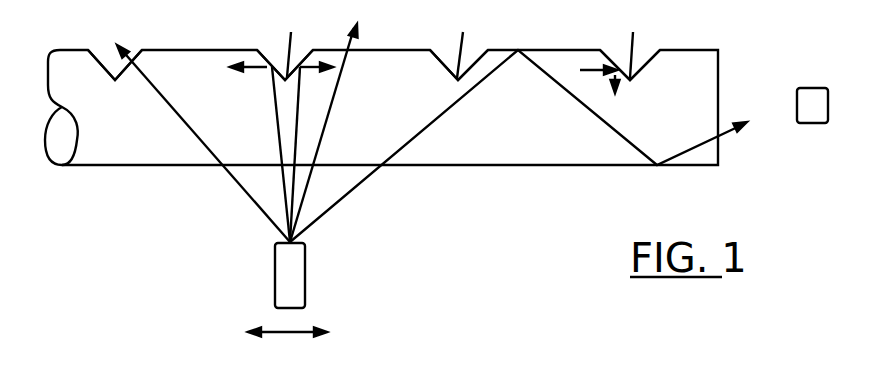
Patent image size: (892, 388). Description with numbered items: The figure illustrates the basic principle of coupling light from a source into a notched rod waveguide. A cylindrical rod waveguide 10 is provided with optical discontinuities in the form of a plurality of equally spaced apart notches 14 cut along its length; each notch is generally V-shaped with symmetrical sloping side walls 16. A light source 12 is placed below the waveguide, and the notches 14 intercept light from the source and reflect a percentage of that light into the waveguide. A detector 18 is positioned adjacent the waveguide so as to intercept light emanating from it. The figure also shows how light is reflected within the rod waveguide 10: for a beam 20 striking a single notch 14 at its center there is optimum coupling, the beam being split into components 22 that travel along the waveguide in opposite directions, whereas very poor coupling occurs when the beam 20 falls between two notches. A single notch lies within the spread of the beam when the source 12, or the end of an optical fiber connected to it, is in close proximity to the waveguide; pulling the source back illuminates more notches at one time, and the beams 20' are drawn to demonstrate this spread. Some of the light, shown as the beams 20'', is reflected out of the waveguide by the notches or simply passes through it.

The cylindrical rod waveguide 10 is at (150, 186).
The light source 12 is at (295, 277).
The notches 14 is at (374, 42).
The sloping side walls 16 is at (113, 80).
The detector 18 is at (823, 122).
The beam 20 is at (263, 154).
The beams 20' is at (518, 146).
The beams 20'' is at (203, 143).
The components 22 is at (265, 72).